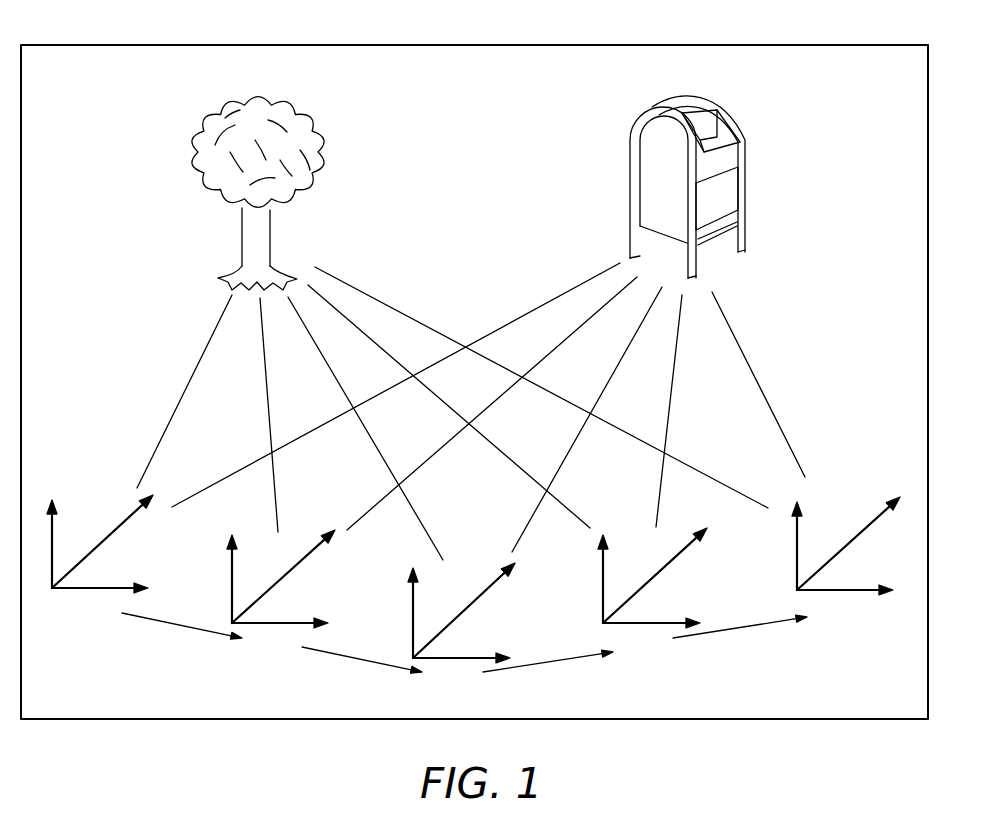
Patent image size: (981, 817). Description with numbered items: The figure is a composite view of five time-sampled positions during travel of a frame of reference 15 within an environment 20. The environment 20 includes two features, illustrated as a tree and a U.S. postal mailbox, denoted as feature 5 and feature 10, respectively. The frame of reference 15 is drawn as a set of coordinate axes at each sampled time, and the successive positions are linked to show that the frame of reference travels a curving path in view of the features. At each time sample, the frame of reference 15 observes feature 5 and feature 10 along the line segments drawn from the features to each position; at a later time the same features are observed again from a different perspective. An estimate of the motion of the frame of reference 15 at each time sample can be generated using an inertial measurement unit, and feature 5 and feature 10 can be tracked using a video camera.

The environment 20 is at (475, 44).
The feature 5 is at (195, 176).
The feature 10 is at (743, 147).
The frame of reference 15 is at (231, 580).